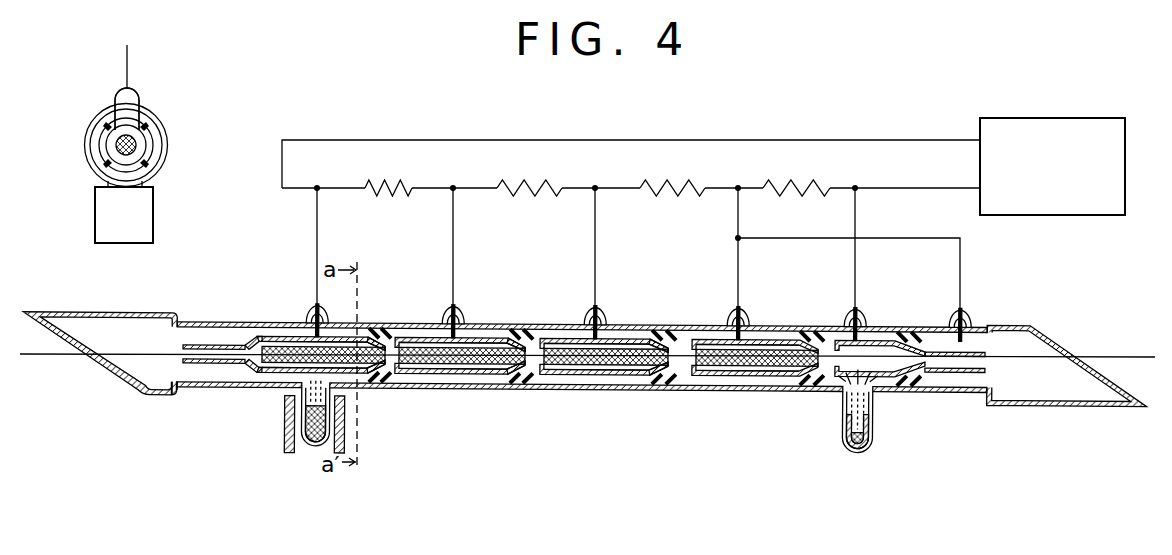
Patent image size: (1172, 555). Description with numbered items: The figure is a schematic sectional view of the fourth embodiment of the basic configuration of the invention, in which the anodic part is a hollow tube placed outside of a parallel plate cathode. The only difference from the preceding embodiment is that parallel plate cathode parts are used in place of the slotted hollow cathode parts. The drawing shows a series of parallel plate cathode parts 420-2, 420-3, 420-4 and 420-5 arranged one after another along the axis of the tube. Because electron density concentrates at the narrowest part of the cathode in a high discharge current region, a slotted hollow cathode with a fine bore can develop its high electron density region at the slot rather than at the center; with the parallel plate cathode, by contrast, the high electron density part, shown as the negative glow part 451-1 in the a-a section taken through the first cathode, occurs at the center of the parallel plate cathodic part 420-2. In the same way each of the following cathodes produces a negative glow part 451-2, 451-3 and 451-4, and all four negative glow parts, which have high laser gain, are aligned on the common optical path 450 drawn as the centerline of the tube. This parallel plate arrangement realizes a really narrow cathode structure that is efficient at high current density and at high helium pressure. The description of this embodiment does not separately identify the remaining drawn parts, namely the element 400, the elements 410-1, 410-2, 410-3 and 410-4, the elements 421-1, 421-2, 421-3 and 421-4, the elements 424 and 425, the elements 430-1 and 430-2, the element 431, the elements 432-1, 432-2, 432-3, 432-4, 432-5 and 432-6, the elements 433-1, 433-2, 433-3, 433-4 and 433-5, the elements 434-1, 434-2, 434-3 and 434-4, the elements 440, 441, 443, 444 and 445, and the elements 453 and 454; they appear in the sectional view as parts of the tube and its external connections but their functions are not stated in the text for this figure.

The D.C. voltage source 400 is at (1018, 118).
The resistor 410-1 is at (372, 188).
The resistor 410-2 is at (515, 188).
The resistor 410-3 is at (665, 188).
The resistor 410-4 is at (785, 188).
The parallel plate cathodic part 420-2 is at (276, 376).
The parallel plate cathode 420-3 is at (488, 373).
The parallel plate cathode 420-4 is at (615, 373).
The parallel plate cathode 420-5 is at (735, 373).
The electrode tube 421-1 is at (262, 373).
The electrode tube 421-2 is at (450, 388).
The electrode tube 421-3 is at (580, 383).
The electrode tube 421-4 is at (690, 386).
The outlet electrode tube 424 is at (962, 367).
The end electrode 425 is at (835, 389).
The inlet end cap 430-1 is at (90, 357).
The outlet end cap 430-2 is at (1073, 350).
The seal joint 431 is at (173, 394).
The lead pin 432-1 is at (320, 305).
The lead pin 432-2 is at (458, 305).
The lead pin 432-3 is at (598, 305).
The lead pin 432-4 is at (742, 305).
The lead pin 432-5 is at (860, 305).
The lead pin 432-6 is at (965, 305).
The insulator 433-1 is at (381, 328).
The insulator 433-2 is at (513, 328).
The insulator 433-3 is at (653, 328).
The insulator 433-4 is at (804, 328).
The insulator 433-5 is at (906, 328).
The tapered electrode end 434-1 is at (278, 306).
The tapered electrode end 434-2 is at (405, 308).
The tapered electrode end 434-3 is at (526, 340).
The tapered electrode end 434-4 is at (668, 340).
The sample 440 is at (314, 441).
The heater 441 is at (874, 437).
The oven 443 is at (289, 453).
The sample tube 444 is at (290, 408).
The collected sample 445 is at (856, 449).
The optical path 450 is at (134, 352).
The negative glow part 451-1 is at (350, 381).
The negative glow part 451-2 is at (470, 366).
The negative glow part 451-3 is at (625, 363).
The negative glow part 451-4 is at (770, 363).
The inlet tube 453 is at (300, 376).
The outlet opening 454 is at (843, 418).